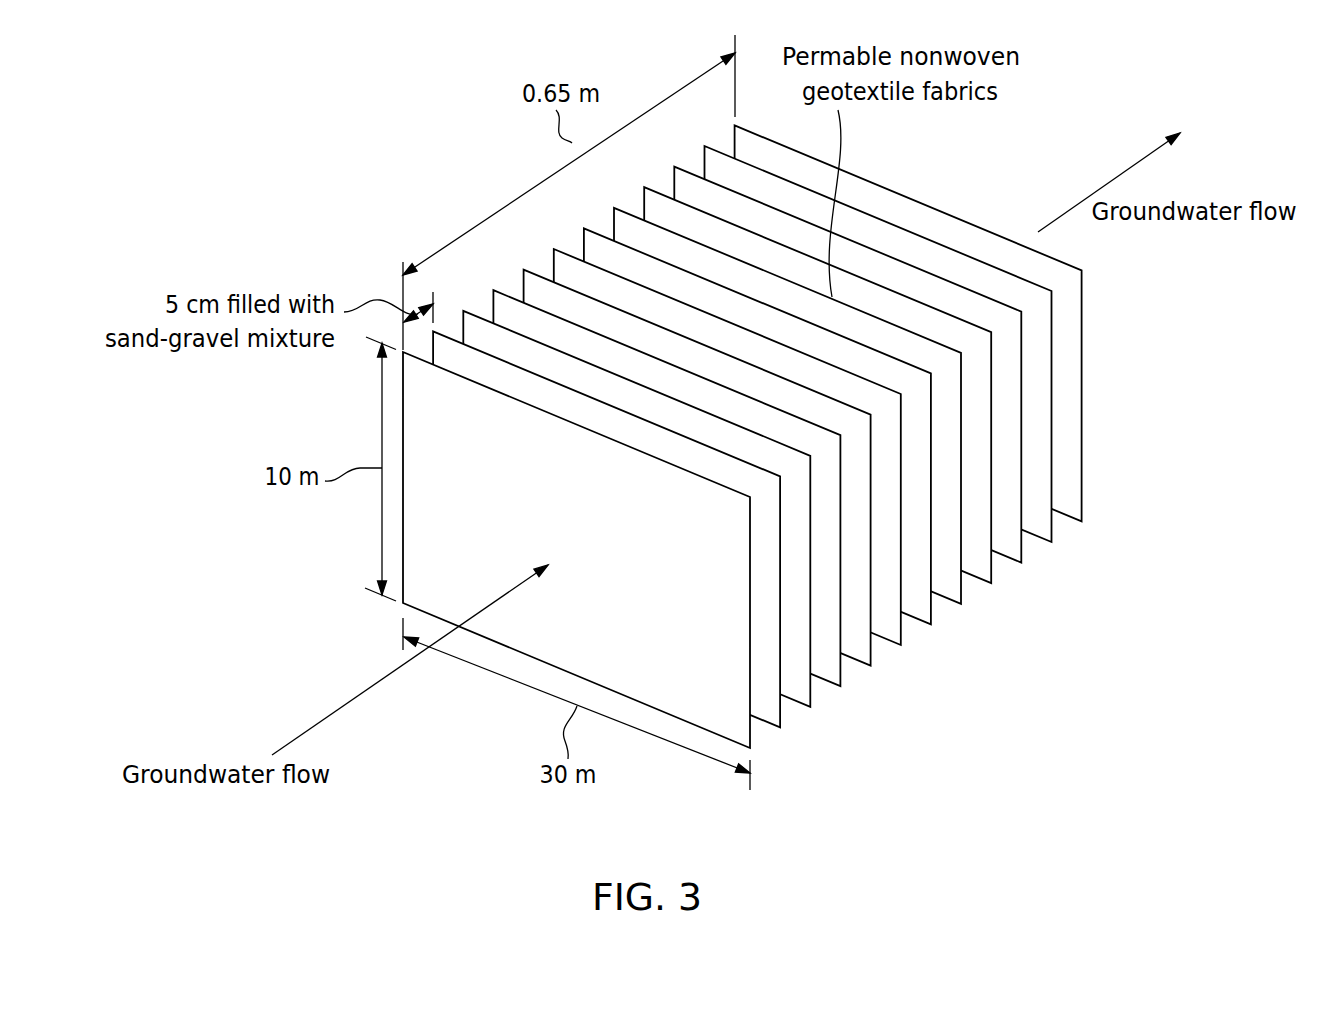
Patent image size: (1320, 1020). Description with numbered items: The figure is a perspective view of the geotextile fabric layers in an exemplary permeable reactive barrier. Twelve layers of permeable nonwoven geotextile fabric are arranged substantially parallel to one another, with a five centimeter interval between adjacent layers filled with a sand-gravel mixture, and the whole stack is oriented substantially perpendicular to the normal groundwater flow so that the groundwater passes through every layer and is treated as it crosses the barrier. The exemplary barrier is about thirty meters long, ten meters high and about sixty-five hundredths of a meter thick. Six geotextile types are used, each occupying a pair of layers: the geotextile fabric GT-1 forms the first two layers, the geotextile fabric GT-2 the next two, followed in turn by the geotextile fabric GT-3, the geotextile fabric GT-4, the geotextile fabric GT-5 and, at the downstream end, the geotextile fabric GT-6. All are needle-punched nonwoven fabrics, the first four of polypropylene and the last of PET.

The geotextile fabric GT-1 is at (626, 580).
The geotextile fabric GT-2 is at (687, 539).
The geotextile fabric GT-3 is at (748, 498).
The geotextile fabric GT-4 is at (808, 456).
The geotextile fabric GT-5 is at (868, 415).
The geotextile fabric GT-6 is at (929, 374).